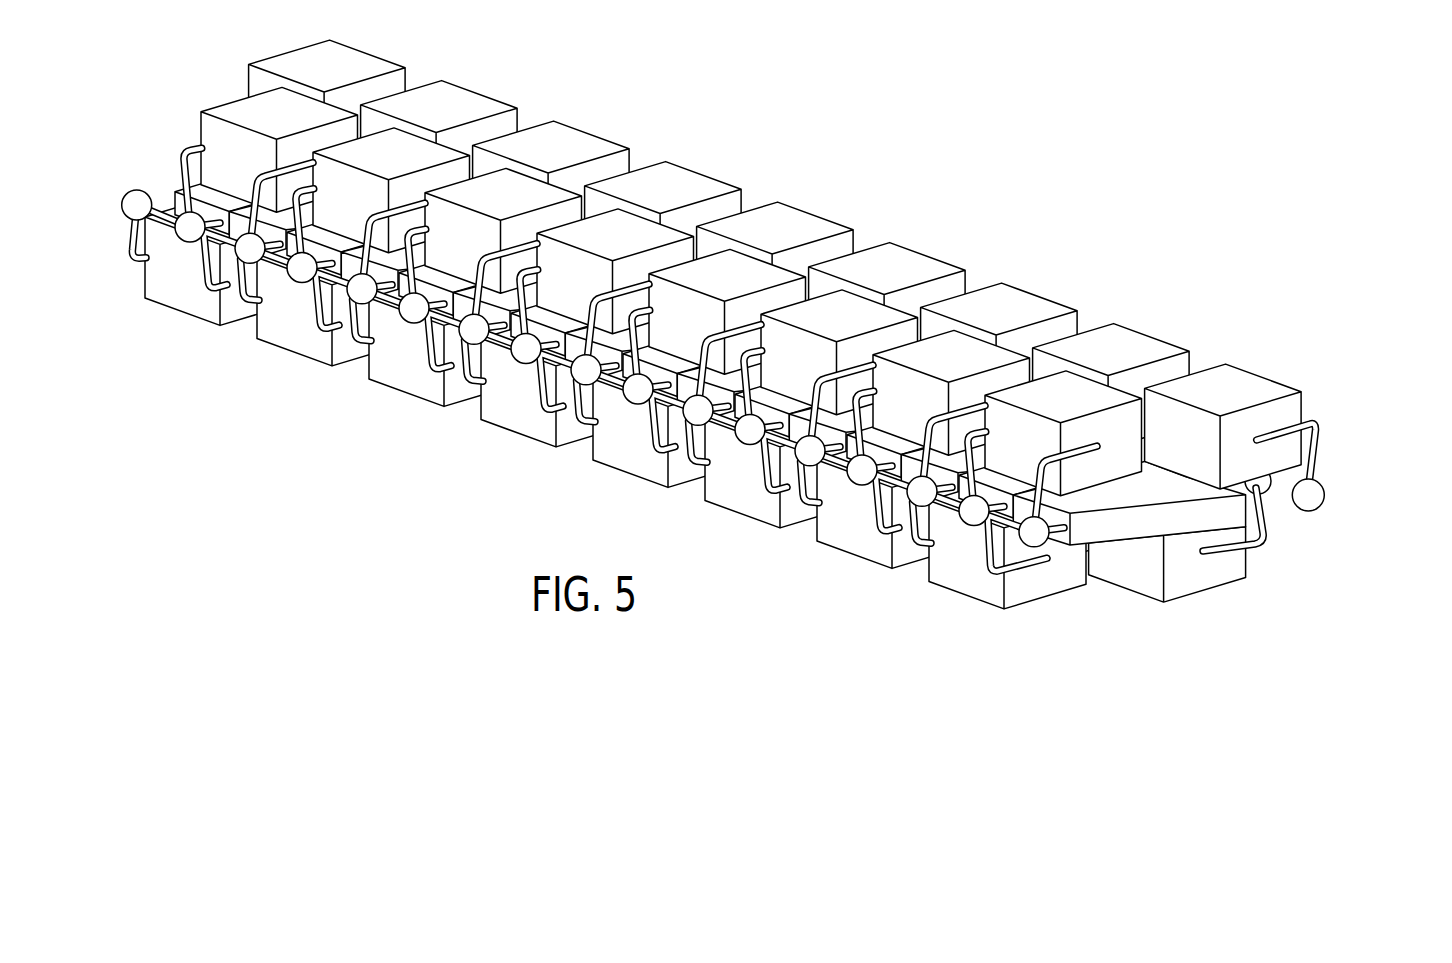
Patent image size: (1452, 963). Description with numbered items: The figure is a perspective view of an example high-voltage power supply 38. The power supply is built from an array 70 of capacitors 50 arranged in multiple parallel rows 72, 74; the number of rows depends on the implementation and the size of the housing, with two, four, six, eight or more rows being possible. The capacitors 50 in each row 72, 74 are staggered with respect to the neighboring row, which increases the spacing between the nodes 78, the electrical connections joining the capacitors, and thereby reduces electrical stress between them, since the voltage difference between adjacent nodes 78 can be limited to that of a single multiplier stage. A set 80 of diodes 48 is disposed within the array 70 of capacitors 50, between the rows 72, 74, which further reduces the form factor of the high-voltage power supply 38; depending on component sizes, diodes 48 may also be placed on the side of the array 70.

The high-voltage power supply 38 is at (773, 366).
The diodes 48 is at (1085, 607).
The capacitors 50 is at (592, 135).
The array 70 is at (1182, 516).
The row 72 is at (1099, 464).
The row 74 is at (1280, 524).
The nodes 78 is at (862, 470).
The set of diodes 80 is at (161, 176).